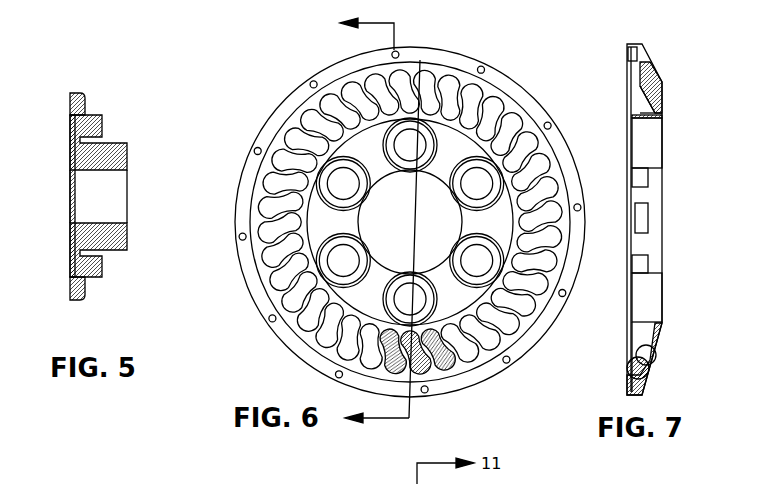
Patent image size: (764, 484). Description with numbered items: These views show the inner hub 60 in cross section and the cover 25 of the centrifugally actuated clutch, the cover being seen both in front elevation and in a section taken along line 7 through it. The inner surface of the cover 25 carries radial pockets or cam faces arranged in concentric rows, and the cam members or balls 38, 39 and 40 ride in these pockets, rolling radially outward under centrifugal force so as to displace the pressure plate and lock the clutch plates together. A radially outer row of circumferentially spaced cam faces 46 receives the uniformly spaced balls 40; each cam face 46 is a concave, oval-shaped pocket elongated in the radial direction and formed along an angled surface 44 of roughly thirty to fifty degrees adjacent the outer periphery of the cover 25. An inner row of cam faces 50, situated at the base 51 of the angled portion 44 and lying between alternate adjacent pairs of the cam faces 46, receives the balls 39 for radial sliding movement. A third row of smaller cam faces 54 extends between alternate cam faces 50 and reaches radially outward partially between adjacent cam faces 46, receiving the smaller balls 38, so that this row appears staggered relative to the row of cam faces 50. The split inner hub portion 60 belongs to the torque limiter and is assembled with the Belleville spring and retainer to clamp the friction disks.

In FIG. 6, the section line 7— 7 is at (373, 222).
In FIG. 6, the cover 25 is at (287, 95).
In FIG. 7, the cover 25 is at (663, 140).
In FIG. 6, the ball 38 is at (445, 350).
In FIG. 6, the ball 39 is at (418, 360).
In FIG. 7, the ball 39 is at (642, 352).
In FIG. 6, the ball 40 is at (318, 367).
In FIG. 7, the ball 40 is at (632, 370).
In FIG. 7, the angled surface 44 is at (643, 388).
In FIG. 6, the cam face 46 is at (268, 247).
In FIG. 7, the cam face 46 is at (657, 368).
In FIG. 6, the cam face 50 is at (293, 190).
In FIG. 7, the cam face 50 is at (659, 356).
In FIG. 7, the base 51 is at (659, 361).
In FIG. 6, the cam face 54 is at (312, 292).
In FIG. 7, the cam face 54 is at (662, 97).
In FIG. 5, the inner hub portion 60 is at (73, 130).